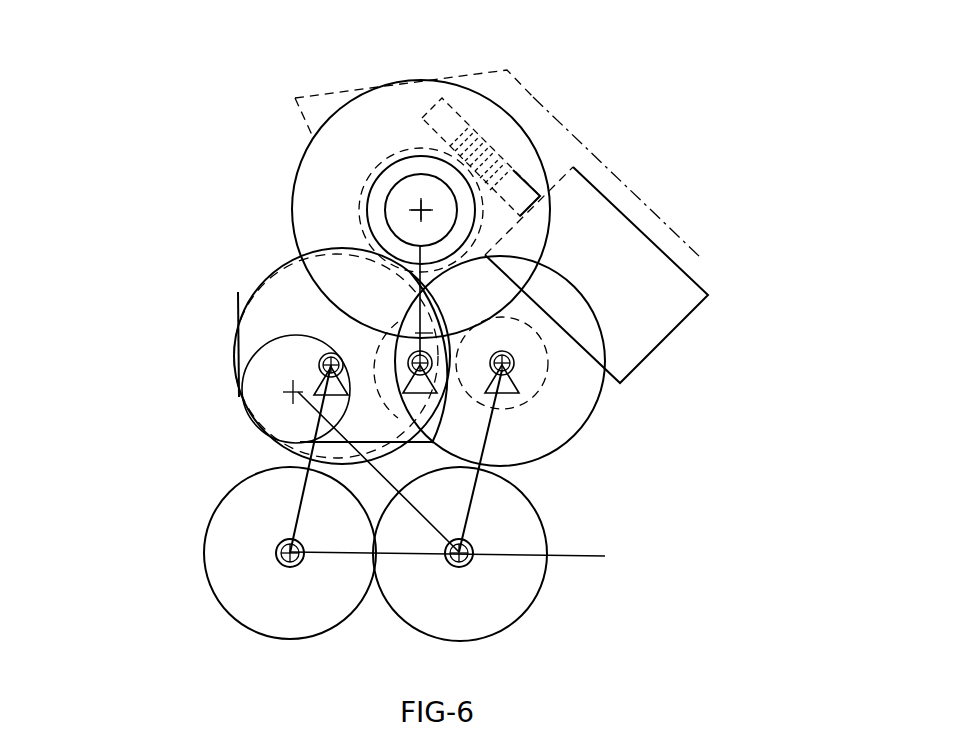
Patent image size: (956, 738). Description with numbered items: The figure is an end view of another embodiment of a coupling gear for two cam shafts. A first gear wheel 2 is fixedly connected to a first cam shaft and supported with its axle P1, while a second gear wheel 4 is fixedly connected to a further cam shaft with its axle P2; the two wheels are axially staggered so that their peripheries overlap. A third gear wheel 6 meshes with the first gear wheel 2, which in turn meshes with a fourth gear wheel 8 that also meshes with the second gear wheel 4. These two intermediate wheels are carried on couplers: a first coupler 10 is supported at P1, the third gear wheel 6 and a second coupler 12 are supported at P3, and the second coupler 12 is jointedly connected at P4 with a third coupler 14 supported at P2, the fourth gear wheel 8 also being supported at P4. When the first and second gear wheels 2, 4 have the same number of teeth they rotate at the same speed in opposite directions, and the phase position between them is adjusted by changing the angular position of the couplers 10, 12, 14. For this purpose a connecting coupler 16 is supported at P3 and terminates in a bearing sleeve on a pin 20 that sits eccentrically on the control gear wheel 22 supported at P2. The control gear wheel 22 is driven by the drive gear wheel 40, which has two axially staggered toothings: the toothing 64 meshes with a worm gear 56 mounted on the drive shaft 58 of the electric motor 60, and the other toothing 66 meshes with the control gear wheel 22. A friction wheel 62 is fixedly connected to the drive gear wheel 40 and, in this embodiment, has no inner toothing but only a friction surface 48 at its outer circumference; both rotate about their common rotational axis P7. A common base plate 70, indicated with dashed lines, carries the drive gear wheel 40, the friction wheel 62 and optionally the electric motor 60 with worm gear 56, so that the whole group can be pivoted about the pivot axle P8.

The first gear wheel 2 is at (598, 398).
The second gear wheel 4 is at (234, 393).
The third gear wheel 6 is at (523, 582).
The fourth gear wheel 8 is at (255, 530).
The first coupler 10 is at (450, 450).
The second coupler 12 is at (412, 553).
The third coupler 14 is at (297, 500).
The connecting coupler 16 is at (425, 443).
The pin 20 is at (247, 356).
The control gear wheel 22 is at (263, 313).
The drive gear wheel 40 is at (392, 190).
The friction surface 48 is at (343, 107).
The worm gear 56 is at (498, 147).
The drive shaft 58 is at (515, 193).
The electric motor 60 is at (628, 260).
The friction wheel 62 is at (415, 103).
The toothing 64 is at (403, 152).
The toothing 66 is at (358, 230).
The common base plate 70 is at (613, 195).
The axle of first cam shaft P1 is at (514, 362).
The axle of second cam shaft P2 is at (319, 367).
The support point P3 is at (543, 561).
The joint P4 is at (278, 558).
The common rotational axis P7 is at (415, 211).
The pivot axle P8 is at (438, 395).